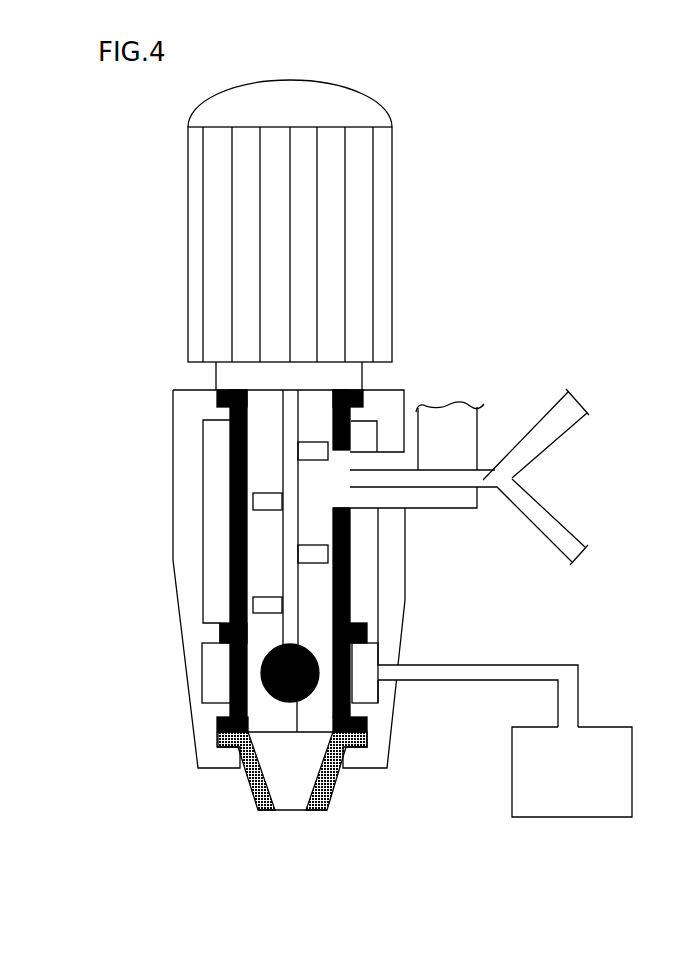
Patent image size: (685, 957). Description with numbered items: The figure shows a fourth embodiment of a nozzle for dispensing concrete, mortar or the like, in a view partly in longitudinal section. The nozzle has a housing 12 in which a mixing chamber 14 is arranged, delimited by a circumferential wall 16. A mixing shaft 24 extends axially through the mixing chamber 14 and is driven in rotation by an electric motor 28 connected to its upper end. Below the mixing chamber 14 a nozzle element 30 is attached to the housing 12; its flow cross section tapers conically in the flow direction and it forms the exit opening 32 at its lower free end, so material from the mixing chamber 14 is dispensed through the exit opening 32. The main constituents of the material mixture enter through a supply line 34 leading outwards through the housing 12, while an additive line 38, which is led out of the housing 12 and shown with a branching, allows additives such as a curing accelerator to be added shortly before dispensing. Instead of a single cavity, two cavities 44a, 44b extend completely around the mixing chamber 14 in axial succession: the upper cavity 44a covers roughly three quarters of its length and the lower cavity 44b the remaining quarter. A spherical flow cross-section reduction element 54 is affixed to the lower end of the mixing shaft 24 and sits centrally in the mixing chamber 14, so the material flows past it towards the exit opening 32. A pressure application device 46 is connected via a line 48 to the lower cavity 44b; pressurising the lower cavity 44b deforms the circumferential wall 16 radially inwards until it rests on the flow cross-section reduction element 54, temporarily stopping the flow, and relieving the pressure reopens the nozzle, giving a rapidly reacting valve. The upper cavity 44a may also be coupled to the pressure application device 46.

The housing 12 is at (393, 565).
The mixing chamber 14 is at (257, 546).
The circumferential wall 16 is at (352, 601).
The mixing shaft 24 is at (287, 477).
The electric motor 28 is at (362, 230).
The nozzle element 30 is at (257, 793).
The exit opening 32 is at (300, 812).
The supply line 34 is at (440, 412).
The additive line 38 is at (493, 470).
The upper cavity 44a is at (215, 492).
The lower cavity 44b is at (217, 668).
The pressure application device 46 is at (590, 792).
The line 48 is at (568, 688).
The flow cross-section reduction element 54 is at (297, 732).